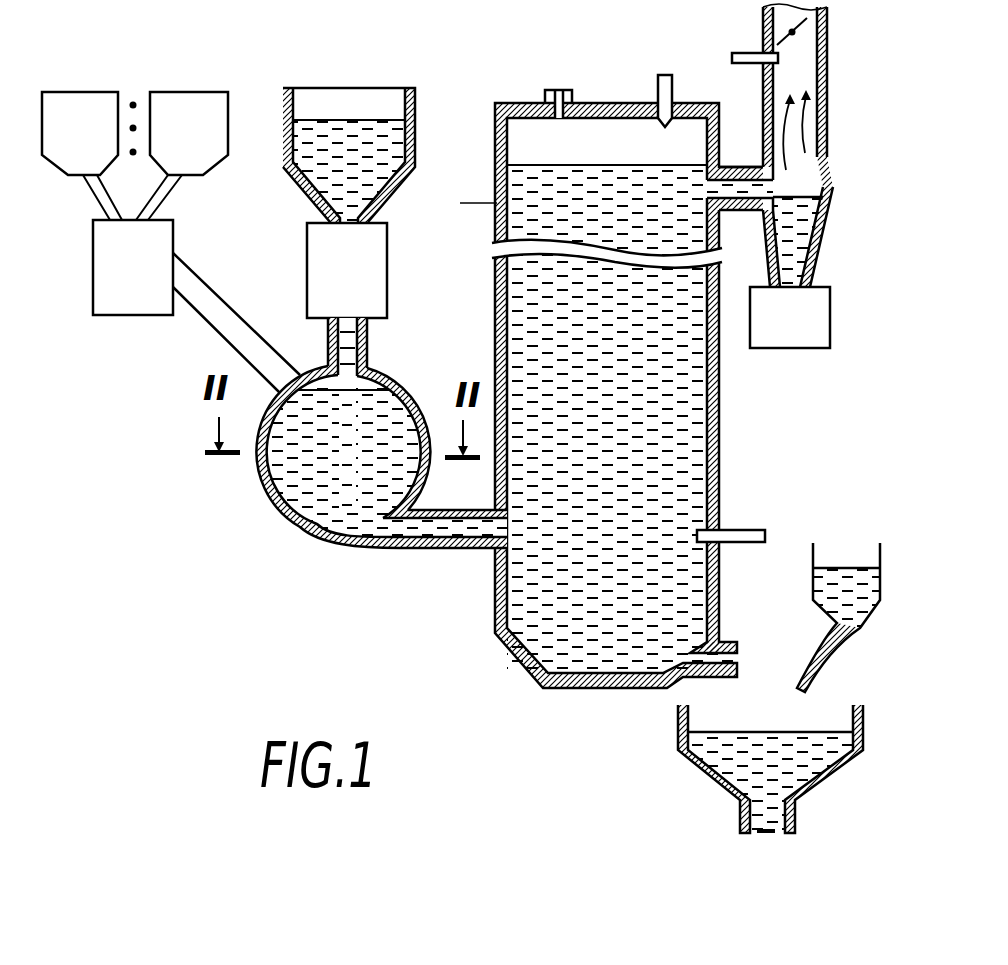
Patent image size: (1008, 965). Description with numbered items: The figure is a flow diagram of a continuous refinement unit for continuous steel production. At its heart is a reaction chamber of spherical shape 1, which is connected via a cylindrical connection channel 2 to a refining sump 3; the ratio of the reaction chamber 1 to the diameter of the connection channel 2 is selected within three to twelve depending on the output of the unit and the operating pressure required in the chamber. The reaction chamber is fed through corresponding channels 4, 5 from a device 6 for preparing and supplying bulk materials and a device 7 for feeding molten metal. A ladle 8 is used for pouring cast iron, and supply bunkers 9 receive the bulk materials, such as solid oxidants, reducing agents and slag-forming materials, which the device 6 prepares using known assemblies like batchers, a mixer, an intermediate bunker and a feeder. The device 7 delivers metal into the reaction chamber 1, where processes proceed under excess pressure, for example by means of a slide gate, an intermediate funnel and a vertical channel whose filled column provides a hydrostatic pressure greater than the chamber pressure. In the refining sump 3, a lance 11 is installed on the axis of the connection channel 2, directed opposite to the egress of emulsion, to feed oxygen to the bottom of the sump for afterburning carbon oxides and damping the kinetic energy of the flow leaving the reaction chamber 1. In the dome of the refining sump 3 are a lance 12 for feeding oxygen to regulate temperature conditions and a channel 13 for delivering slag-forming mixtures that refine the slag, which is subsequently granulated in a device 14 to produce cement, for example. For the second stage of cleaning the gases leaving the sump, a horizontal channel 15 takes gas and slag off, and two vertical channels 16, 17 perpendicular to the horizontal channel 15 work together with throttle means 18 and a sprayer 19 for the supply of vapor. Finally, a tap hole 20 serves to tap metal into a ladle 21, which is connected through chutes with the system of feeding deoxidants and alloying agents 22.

The reaction chamber 1 is at (407, 392).
The connection channel 2 is at (397, 548).
The refining sump 3 is at (490, 600).
The channel for bulk materials 4 is at (222, 313).
The channel for molten metal 5 is at (367, 362).
The device for preparing and supplying bulk materials 6 is at (108, 258).
The device for feeding molten metal 7 is at (373, 288).
The ladle 8 is at (417, 152).
The supply bunkers 9 is at (170, 103).
The lance 11 is at (737, 530).
The lance 12 is at (662, 85).
The channel for delivering slag-forming mixtures 13 is at (543, 92).
The device 14 is at (820, 330).
The horizontal channel 15 is at (738, 167).
The vertical channel 16 is at (822, 245).
The vertical channel 17 is at (828, 98).
The throttle means 18 is at (820, 33).
The sprayer 19 is at (733, 55).
The tap hole 20 is at (723, 642).
The ladle 21 is at (680, 715).
The system of feeding deoxidants and alloying agents 22 is at (840, 573).